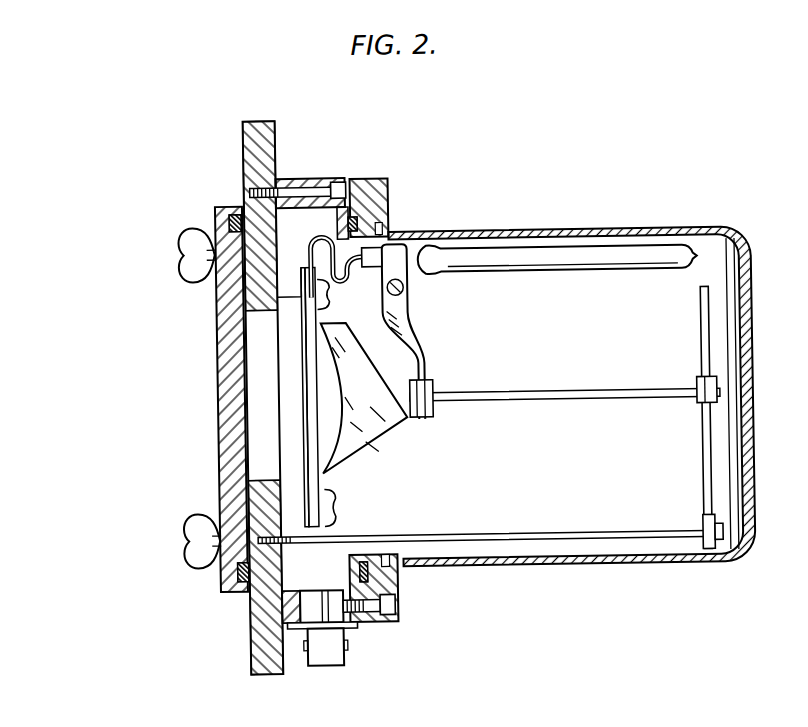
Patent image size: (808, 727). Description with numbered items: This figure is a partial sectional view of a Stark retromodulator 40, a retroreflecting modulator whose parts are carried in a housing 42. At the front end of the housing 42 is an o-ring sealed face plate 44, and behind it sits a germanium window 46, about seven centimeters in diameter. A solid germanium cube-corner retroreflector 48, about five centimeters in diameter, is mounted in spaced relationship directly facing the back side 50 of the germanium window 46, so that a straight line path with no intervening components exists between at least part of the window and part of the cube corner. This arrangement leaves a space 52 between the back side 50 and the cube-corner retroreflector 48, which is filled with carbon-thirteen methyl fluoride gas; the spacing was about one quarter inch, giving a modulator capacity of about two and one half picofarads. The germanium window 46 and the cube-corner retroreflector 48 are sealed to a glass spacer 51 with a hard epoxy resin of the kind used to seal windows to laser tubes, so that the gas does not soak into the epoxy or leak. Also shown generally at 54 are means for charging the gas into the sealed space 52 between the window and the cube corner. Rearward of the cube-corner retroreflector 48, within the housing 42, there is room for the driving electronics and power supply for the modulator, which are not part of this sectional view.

The Stark retromodulator 40 is at (467, 395).
The housing 42 is at (485, 231).
The o-ring sealed face plate 44 is at (229, 209).
The germanium window 46 is at (278, 347).
The germanium cube-corner retroreflector 48 is at (355, 371).
The back side of the germanium window 50 is at (307, 412).
The glass spacer 51 is at (317, 517).
The space 52 is at (314, 347).
The means for charging the gas 54 is at (586, 251).